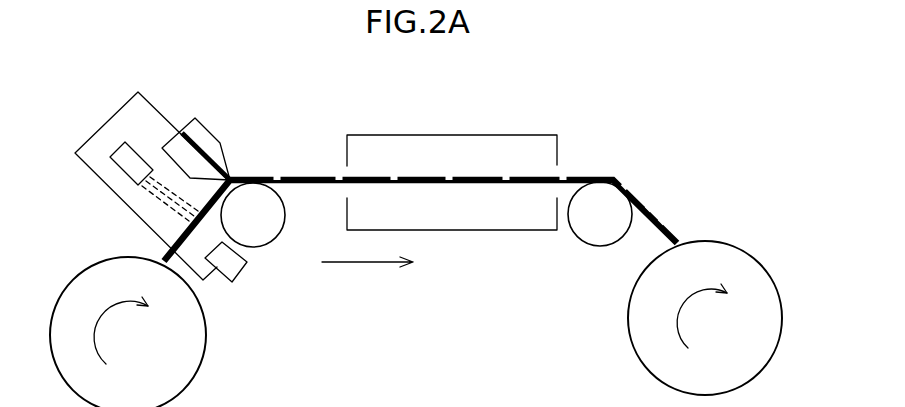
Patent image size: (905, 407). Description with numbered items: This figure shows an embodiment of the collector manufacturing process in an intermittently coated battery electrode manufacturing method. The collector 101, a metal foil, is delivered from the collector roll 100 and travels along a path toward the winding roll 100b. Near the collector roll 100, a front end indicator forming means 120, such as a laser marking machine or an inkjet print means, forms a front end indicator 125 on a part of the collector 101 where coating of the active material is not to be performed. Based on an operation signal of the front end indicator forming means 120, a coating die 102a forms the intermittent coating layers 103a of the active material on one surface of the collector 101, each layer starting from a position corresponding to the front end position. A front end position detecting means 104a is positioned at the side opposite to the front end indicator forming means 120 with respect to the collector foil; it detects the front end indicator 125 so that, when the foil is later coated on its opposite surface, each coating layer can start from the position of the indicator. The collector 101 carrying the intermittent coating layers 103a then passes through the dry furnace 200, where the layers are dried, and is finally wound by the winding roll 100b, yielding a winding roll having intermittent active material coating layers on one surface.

The collector roll 100 is at (178, 342).
The winding roll 100b is at (707, 258).
The collector 101 is at (563, 177).
The coating die 102a is at (204, 138).
The intermittent coating layers 103a is at (310, 177).
The front end position detecting means 104a is at (247, 265).
The front end indicator forming means 120 is at (128, 165).
The front end indicator 125 is at (192, 232).
The dry furnace 200 is at (435, 135).